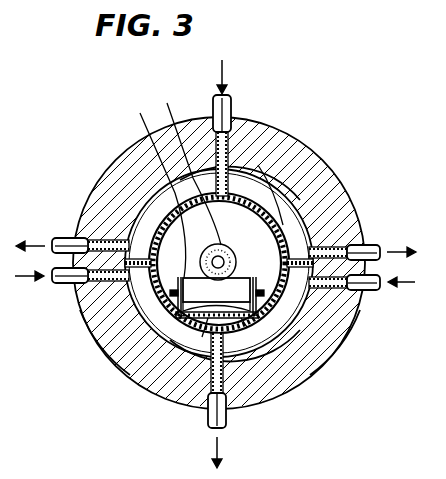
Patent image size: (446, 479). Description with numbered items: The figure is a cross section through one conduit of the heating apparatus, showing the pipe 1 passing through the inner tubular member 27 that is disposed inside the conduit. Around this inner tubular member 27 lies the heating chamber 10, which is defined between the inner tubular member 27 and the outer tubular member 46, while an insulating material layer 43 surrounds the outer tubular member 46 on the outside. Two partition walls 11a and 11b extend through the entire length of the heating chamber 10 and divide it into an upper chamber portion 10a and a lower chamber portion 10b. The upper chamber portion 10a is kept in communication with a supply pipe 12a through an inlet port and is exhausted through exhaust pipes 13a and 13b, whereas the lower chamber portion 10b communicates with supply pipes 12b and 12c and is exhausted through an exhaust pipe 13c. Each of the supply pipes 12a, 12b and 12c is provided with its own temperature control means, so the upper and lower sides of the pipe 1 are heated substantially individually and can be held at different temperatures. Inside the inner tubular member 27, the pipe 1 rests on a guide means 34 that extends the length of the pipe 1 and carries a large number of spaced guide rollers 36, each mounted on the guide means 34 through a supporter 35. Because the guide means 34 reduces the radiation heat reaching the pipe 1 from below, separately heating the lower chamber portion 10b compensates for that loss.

The pipe 1 is at (222, 166).
The heating chamber 10 is at (237, 244).
The upper chamber portion 10a is at (263, 192).
The lower chamber portion 10b is at (292, 333).
The partition wall 11a is at (337, 325).
The partition wall 11b is at (96, 320).
The supply pipe 12a is at (231, 113).
The supply pipe 12b is at (372, 290).
The supply pipe 12c is at (70, 283).
The exhaust pipe 13a is at (368, 250).
The exhaust pipe 13b is at (70, 238).
The exhaust pipe 13c is at (222, 428).
The inner tubular member 27 is at (280, 220).
The guide means 34 is at (200, 340).
The supporter 35 is at (157, 197).
The guide roller 36 is at (265, 340).
The insulating material layer 43 is at (298, 150).
The outer tubular member 46 is at (310, 233).